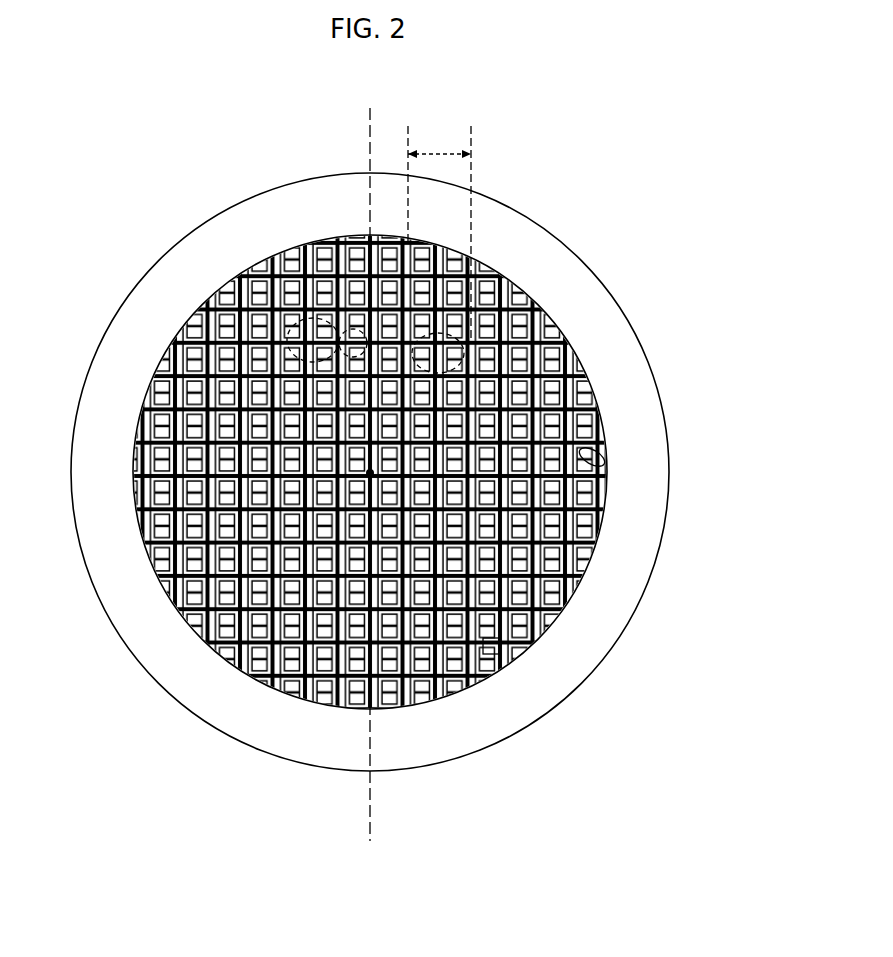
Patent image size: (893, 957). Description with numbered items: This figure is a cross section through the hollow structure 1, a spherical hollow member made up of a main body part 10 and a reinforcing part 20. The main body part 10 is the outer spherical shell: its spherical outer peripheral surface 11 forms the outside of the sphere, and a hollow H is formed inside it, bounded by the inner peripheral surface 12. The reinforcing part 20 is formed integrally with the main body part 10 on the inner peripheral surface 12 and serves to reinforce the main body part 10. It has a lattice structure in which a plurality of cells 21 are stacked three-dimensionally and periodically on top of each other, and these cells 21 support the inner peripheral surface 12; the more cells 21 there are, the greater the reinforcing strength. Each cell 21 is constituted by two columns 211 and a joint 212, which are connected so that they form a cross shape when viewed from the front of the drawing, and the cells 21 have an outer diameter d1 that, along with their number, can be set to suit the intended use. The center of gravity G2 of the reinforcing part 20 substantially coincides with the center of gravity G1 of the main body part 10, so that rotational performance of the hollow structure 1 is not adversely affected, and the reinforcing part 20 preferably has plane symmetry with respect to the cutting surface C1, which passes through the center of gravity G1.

The hollow structure 1 is at (390, 121).
The main body part 10 is at (508, 233).
The outer peripheral surface 11 is at (652, 368).
The inner peripheral surface 12 is at (574, 444).
The reinforcing part 20 is at (510, 383).
The cell 21 is at (300, 330).
The column 211 is at (292, 322).
The joint 212 is at (345, 335).
The hollow H is at (483, 638).
The cutting surface C1 is at (365, 797).
The outer diameter of the cells d1 is at (439, 232).
The center of gravity of the main body part G1 is at (360, 462).
The center of gravity of the reinforcing part G2 is at (370, 473).